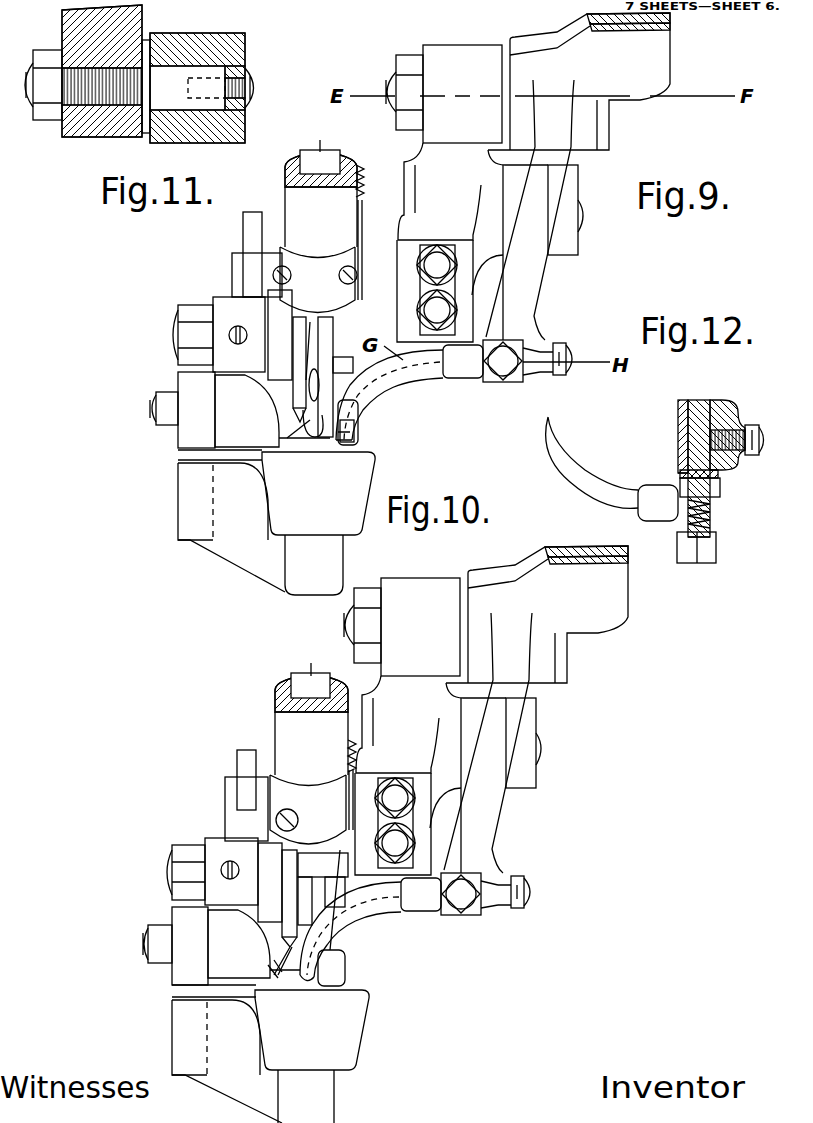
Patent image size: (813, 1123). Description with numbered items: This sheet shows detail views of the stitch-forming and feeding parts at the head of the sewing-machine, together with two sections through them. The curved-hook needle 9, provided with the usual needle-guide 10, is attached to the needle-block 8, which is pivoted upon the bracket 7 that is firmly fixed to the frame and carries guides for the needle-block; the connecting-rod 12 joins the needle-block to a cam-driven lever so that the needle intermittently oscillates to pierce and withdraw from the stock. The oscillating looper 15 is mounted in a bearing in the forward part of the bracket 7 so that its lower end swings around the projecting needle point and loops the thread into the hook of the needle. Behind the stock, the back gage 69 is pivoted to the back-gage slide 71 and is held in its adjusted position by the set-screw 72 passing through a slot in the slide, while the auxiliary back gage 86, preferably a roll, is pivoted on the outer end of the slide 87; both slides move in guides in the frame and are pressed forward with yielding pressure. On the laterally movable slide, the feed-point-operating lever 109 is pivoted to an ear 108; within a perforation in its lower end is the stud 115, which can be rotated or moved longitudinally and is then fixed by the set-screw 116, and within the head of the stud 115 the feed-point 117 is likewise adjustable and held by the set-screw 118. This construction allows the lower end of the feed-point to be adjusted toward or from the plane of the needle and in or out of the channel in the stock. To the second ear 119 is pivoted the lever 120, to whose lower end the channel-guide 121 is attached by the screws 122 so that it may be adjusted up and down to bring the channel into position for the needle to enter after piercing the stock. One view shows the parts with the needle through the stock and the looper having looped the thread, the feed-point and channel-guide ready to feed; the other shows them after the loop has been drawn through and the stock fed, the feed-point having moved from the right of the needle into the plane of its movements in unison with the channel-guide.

In FIG. 9, the bracket 7 is at (318, 231).
In FIG. 10, the bracket 7 is at (313, 758).
In FIG. 9, the needle-block 8 is at (280, 335).
In FIG. 10, the needle-block 8 is at (270, 882).
In FIG. 9, the curved-hook needle 9 is at (305, 380).
In FIG. 10, the curved-hook needle 9 is at (325, 918).
In FIG. 9, the needle-guide 10 is at (328, 440).
In FIG. 10, the needle-guide 10 is at (323, 889).
In FIG. 9, the connecting-rod 12 is at (257, 254).
In FIG. 10, the connecting-rod 12 is at (245, 758).
In FIG. 9, the oscillating looper 15 is at (310, 152).
In FIG. 10, the oscillating looper 15 is at (300, 678).
In FIG. 9, the back gage 69 is at (350, 455).
In FIG. 10, the back gage 69 is at (358, 975).
In FIG. 9, the back-gage slide 71 is at (196, 410).
In FIG. 10, the back-gage slide 71 is at (190, 946).
In FIG. 9, the set-screw 72 is at (158, 410).
In FIG. 10, the set-screw 72 is at (158, 930).
In FIG. 9, the auxiliary back gage 86 is at (318, 523).
In FIG. 10, the auxiliary back gage 86 is at (312, 1056).
In FIG. 9, the slide 87 is at (231, 527).
In FIG. 10, the slide 87 is at (227, 1061).
In FIG. 11, the ear 108 is at (72, 34).
In FIG. 9, the ear 108 is at (444, 192).
In FIG. 10, the ear 108 is at (402, 725).
In FIG. 11, the feed-point-operating lever 109 is at (186, 46).
In FIG. 9, the feed-point-operating lever 109 is at (578, 176).
In FIG. 12, the feed-point-operating lever 109 is at (680, 430).
In FIG. 10, the feed-point-operating lever 109 is at (536, 709).
In FIG. 9, the stud 115 is at (500, 382).
In FIG. 12, the stud 115 is at (720, 488).
In FIG. 10, the stud 115 is at (469, 909).
In FIG. 9, the set-screw 116 is at (560, 344).
In FIG. 12, the set-screw 116 is at (752, 426).
In FIG. 10, the set-screw 116 is at (533, 889).
In FIG. 9, the feed-point 117 is at (352, 420).
In FIG. 12, the feed-point 117 is at (560, 452).
In FIG. 10, the feed-point 117 is at (316, 980).
In FIG. 9, the set-screw 118 is at (478, 378).
In FIG. 12, the set-screw 118 is at (716, 550).
In FIG. 10, the set-screw 118 is at (427, 911).
In FIG. 9, the second ear 119 is at (568, 210).
In FIG. 10, the second ear 119 is at (526, 743).
In FIG. 9, the lever 120 is at (472, 242).
In FIG. 10, the lever 120 is at (430, 775).
In FIG. 9, the channel-guide 121 is at (350, 438).
In FIG. 10, the channel-guide 121 is at (291, 978).
In FIG. 9, the screws 122 is at (437, 262).
In FIG. 10, the screws 122 is at (403, 809).